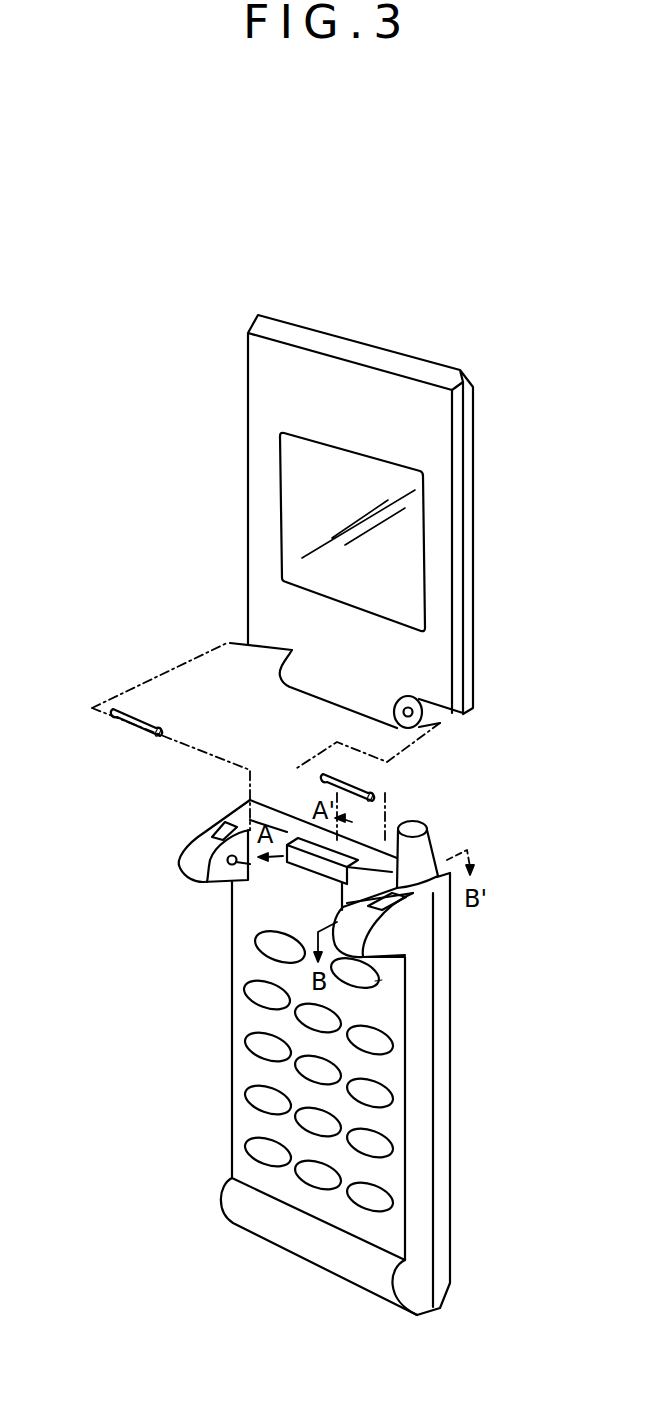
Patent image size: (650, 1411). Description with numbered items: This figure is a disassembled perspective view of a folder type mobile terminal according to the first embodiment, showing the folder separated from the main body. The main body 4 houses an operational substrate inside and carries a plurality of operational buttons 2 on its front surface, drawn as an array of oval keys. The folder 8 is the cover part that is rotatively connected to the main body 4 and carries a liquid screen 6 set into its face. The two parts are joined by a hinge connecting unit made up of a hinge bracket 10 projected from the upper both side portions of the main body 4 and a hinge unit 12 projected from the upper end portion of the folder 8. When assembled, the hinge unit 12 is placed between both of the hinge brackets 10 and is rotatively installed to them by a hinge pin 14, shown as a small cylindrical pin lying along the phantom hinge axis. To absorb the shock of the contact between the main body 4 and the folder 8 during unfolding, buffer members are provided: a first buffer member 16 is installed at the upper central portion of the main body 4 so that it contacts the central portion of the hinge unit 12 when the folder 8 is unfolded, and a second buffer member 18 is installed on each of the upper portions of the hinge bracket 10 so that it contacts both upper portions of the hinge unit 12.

The operational button 2 is at (268, 1150).
The main body 4 is at (445, 1080).
The liquid screen 6 is at (298, 502).
The folder 8 is at (437, 597).
The hinge bracket 10 is at (382, 980).
The hinge unit 12 is at (290, 687).
The hinge pin 14 is at (123, 726).
The first buffer member 16 is at (343, 860).
The second buffer member 18 is at (418, 893).